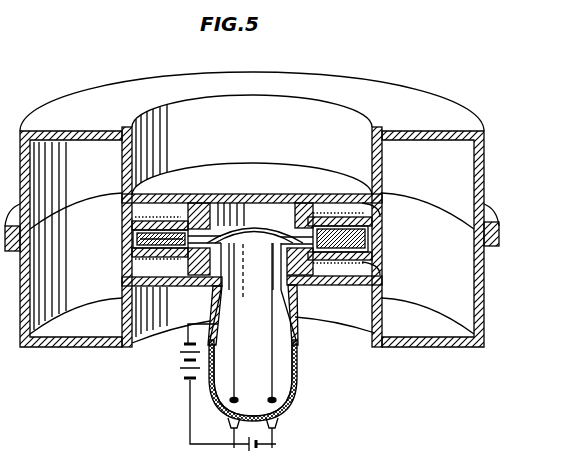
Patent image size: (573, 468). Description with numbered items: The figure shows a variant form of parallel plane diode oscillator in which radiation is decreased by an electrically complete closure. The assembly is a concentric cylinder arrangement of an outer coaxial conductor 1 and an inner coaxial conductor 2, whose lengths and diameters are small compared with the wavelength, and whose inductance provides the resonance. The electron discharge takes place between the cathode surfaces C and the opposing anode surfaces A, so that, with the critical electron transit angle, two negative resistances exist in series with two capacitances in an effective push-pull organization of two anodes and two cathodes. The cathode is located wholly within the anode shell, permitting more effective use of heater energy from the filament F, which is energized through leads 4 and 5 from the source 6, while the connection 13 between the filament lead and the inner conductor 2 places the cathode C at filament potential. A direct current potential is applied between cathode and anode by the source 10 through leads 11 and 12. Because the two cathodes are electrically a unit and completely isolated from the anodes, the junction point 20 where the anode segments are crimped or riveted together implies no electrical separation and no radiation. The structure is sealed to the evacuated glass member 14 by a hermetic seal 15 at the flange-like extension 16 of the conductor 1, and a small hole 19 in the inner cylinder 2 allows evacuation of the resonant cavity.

The coaxial conductor 1 is at (484, 166).
The junction point 20 is at (499, 234).
The small hole 19 is at (284, 207).
The coaxial conductor 2 is at (157, 246).
The anode surface A is at (132, 283).
The cathode surface C is at (135, 268).
The connection 13 is at (186, 236).
The filament F is at (380, 240).
The flange-like extension 16 is at (288, 300).
The lead 5 is at (271, 287).
The lead 4 is at (235, 262).
The seal 15 is at (297, 363).
The glass member 14 is at (292, 393).
The lead 12 is at (182, 330).
The source 10 is at (180, 352).
The lead 11 is at (188, 426).
The source 6 is at (256, 446).